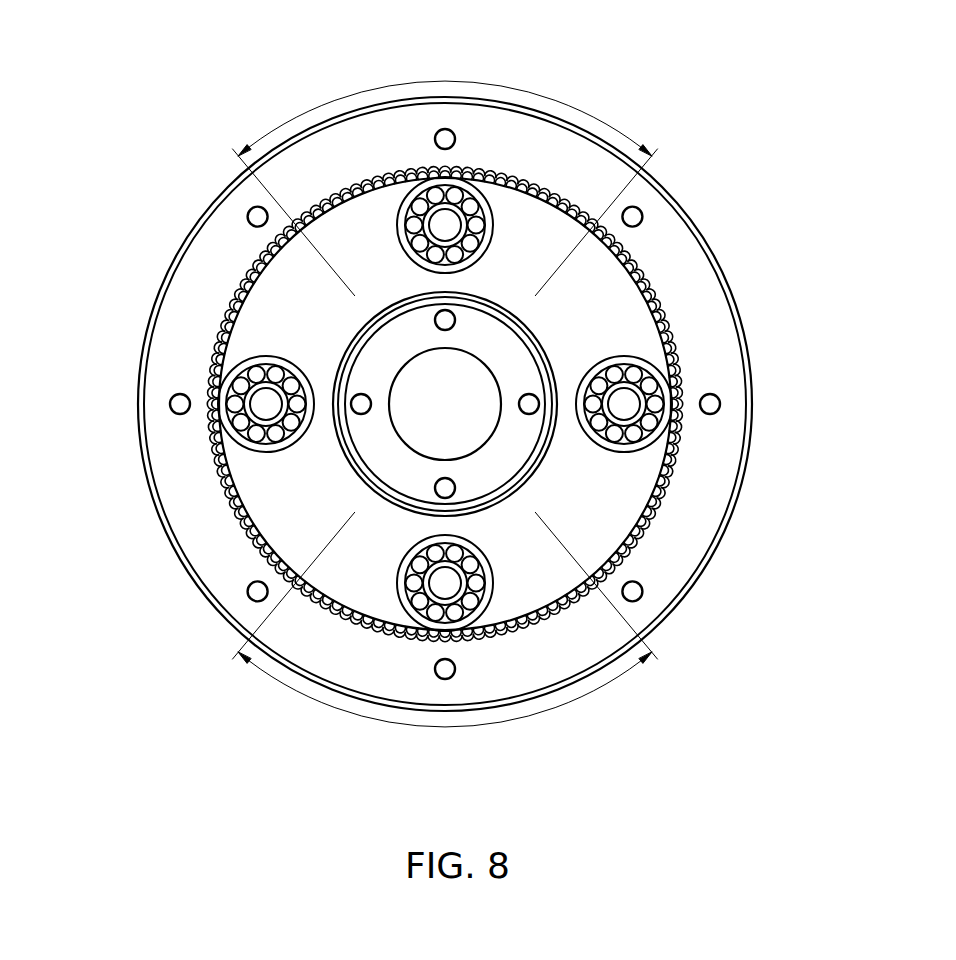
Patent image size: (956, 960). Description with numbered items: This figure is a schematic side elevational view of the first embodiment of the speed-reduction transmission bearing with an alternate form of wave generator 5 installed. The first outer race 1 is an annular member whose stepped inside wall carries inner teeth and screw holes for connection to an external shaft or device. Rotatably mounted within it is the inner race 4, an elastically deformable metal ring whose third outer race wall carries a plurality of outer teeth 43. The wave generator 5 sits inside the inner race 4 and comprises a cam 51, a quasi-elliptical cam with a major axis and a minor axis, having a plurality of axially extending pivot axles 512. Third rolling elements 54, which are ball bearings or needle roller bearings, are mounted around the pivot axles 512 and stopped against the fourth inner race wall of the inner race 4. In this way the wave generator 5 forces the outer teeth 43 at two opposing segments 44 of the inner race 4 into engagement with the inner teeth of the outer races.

The first outer race 1 is at (237, 558).
The inner race 4 is at (418, 403).
The outer teeth 43 is at (213, 347).
The two opposing segments 44 is at (457, 82).
The wave generator 5 is at (505, 404).
The cam 51 is at (637, 468).
The pivot axles 512 is at (632, 404).
The third rolling elements 54 is at (657, 368).